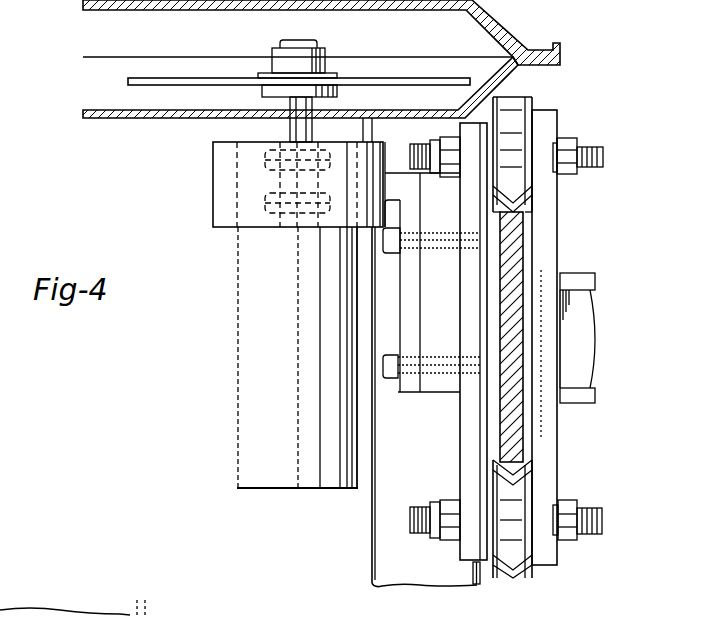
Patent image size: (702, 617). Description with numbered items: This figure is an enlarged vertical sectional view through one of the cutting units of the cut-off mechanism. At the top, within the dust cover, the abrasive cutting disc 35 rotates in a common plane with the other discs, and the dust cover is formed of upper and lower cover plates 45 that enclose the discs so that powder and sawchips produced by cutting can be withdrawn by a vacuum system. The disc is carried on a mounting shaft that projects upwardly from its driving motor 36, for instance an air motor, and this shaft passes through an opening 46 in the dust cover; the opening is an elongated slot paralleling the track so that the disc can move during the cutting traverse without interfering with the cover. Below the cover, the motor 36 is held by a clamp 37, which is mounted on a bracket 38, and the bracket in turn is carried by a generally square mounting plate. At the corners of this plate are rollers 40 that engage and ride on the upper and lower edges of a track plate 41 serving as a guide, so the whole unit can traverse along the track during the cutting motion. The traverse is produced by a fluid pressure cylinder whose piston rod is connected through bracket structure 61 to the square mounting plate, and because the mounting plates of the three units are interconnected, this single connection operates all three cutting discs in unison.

The cutting disc 35 is at (146, 86).
The driving motor 36 is at (238, 370).
The clamp 37 is at (236, 222).
The bracket 38 is at (410, 392).
The rollers 40 is at (532, 101).
The track plate 41 is at (517, 259).
The cover plates 45 is at (83, 110).
The openings 46 is at (290, 116).
The bracket structure 61 is at (588, 403).